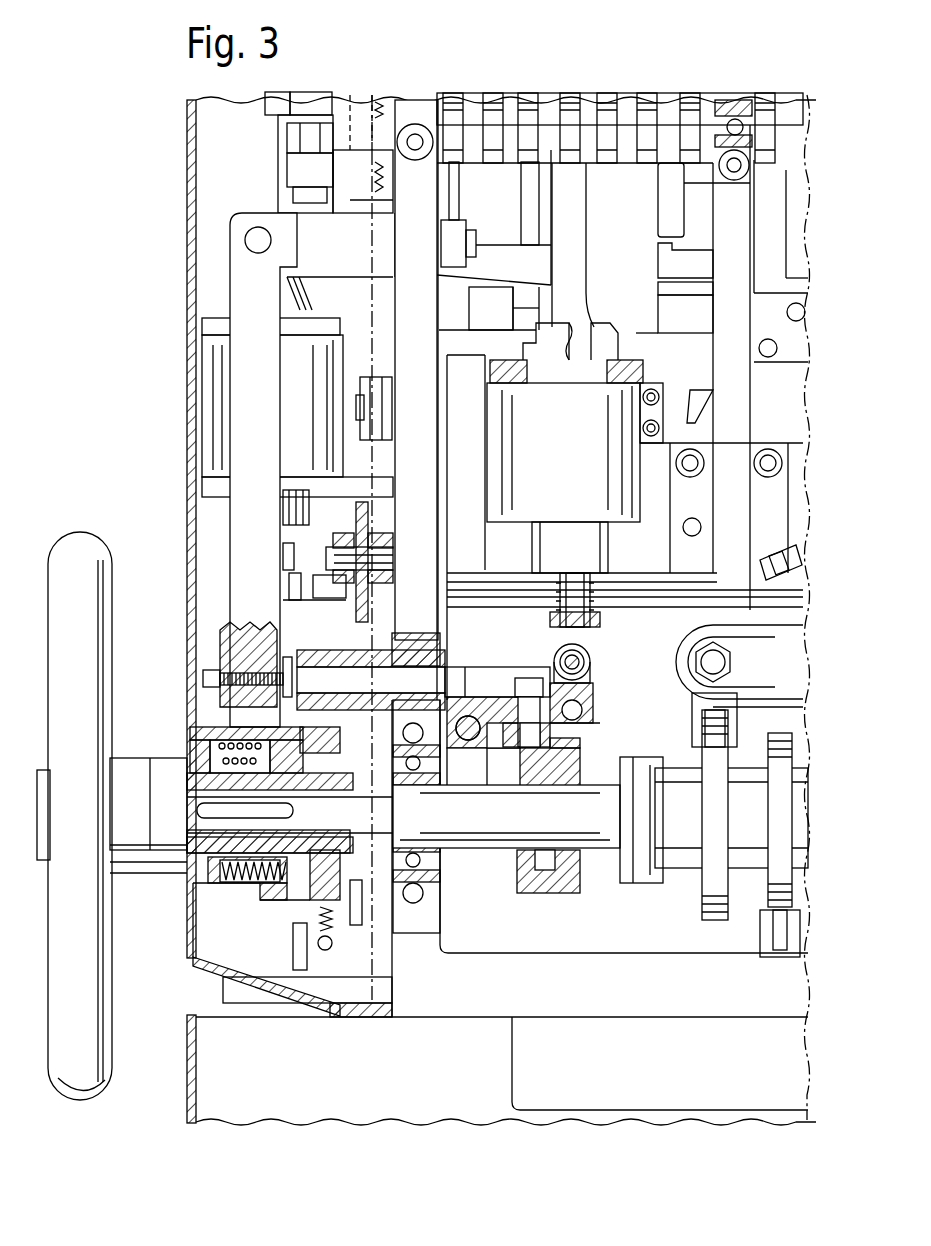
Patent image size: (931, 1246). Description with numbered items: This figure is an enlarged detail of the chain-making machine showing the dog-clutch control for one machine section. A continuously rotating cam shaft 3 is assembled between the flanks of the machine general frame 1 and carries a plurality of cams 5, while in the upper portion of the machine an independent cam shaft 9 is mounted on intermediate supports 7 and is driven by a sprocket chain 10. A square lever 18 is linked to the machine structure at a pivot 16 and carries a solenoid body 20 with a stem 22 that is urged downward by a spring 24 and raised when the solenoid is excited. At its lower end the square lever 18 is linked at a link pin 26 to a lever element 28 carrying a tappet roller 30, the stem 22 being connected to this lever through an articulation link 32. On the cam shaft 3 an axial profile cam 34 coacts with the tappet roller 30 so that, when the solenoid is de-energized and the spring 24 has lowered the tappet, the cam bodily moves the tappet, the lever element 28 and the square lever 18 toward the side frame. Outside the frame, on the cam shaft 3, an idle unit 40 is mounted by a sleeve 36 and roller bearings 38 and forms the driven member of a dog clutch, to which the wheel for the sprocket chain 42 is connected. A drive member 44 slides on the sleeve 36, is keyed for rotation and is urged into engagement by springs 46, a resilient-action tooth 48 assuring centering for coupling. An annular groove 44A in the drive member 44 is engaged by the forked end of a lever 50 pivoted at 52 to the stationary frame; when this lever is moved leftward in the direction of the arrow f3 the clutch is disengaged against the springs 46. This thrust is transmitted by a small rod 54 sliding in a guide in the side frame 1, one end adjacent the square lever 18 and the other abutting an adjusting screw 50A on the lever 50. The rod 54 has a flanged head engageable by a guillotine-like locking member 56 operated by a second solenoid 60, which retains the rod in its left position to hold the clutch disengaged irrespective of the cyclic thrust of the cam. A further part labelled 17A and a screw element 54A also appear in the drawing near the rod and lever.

The flank of the machine general frame 1 is at (398, 295).
The cam shaft 3 is at (595, 830).
The cams 5 is at (702, 900).
The intermediate support 7 is at (750, 167).
The cam shaft 9 is at (623, 100).
The sprocket chain 10 is at (336, 92).
The pivot axis of the square lever 16 is at (464, 412).
The adjusting member 17A is at (312, 568).
The square lever 18 is at (473, 619).
The solenoid body 20 is at (516, 508).
The stem 22 is at (600, 605).
The spring 24 is at (594, 592).
The link pin 26 is at (485, 740).
The lever element 28 is at (498, 705).
The tappet roller 30 is at (561, 730).
The articulation link 32 is at (604, 682).
The axial profile cam 34 is at (522, 850).
The sleeve 36 is at (183, 843).
The roller bearings 38 is at (342, 832).
The idle unit 40 is at (310, 895).
The wheel for sprocket chain 42 is at (385, 905).
The drive member 44 is at (260, 896).
The annular groove 44A is at (245, 734).
The springs 46 is at (250, 878).
The resilient-action tooth 48 is at (306, 733).
The lever 50 is at (233, 515).
The adjusting screw 50A is at (238, 667).
The pivot of lever 50 52 is at (255, 220).
The rod 54 is at (340, 665).
The adjusting screw 54A is at (273, 667).
The guillotine-like locking member 56 is at (302, 648).
The second solenoid 60 is at (215, 365).
The arrow indicating direction of movement f3 is at (167, 680).